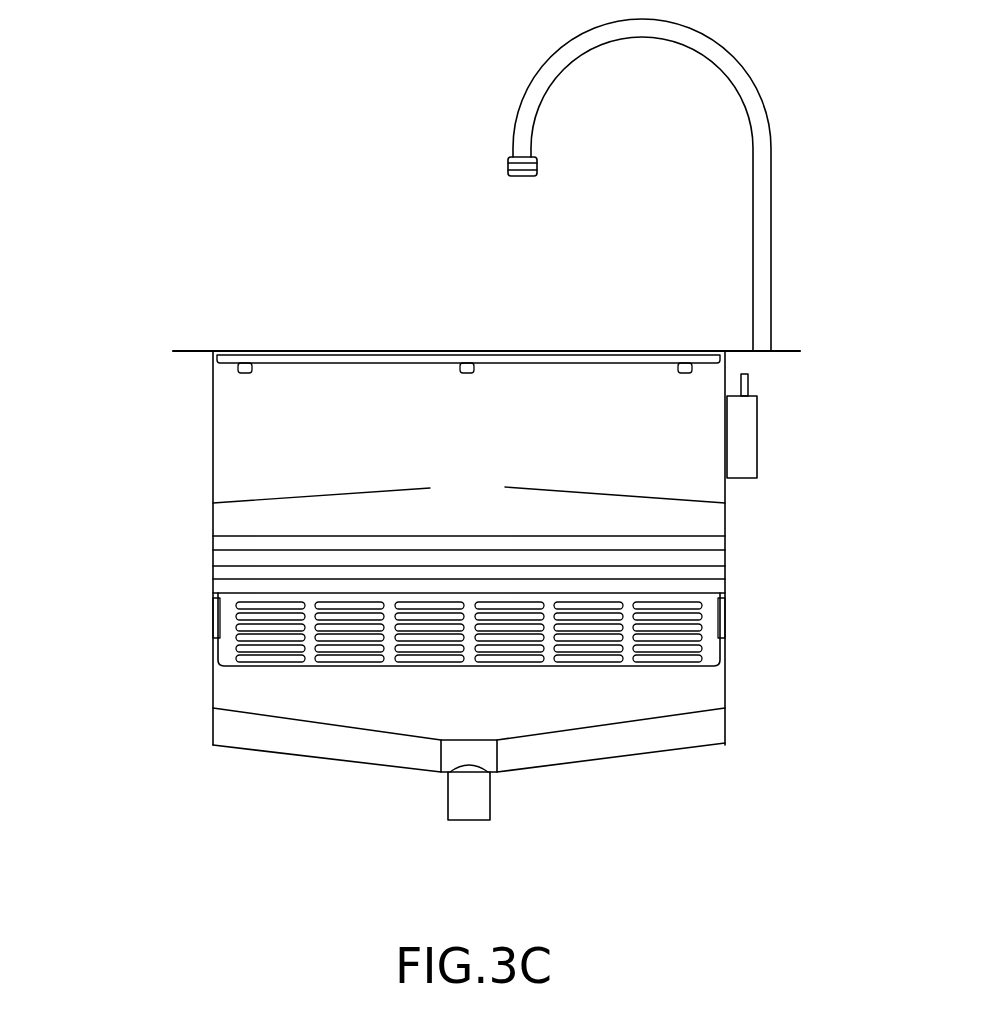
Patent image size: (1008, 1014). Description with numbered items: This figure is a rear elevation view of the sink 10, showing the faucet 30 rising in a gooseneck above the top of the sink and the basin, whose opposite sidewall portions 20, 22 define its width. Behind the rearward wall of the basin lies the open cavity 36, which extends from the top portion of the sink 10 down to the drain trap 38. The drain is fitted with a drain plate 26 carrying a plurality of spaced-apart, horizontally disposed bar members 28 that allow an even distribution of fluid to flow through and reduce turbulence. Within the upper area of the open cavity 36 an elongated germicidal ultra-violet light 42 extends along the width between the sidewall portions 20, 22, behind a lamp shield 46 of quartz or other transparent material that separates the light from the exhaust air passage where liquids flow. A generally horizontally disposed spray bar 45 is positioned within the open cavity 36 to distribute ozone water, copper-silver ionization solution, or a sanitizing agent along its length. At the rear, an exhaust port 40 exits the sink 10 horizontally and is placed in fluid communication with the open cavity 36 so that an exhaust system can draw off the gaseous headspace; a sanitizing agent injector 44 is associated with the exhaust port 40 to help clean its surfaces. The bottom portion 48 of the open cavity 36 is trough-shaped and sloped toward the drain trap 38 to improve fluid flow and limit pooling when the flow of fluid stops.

The sink 10 is at (127, 199).
The sidewall portion 20 is at (740, 553).
The sidewall portion 22 is at (205, 553).
The drain plate 26 is at (712, 647).
The bar members 28 is at (255, 608).
The faucet 30 is at (771, 126).
The open cavity 36 is at (612, 557).
The drain trap 38 is at (483, 797).
The exhaust port 40 is at (744, 466).
The germicidal ultra-violet light 42 is at (232, 541).
The sanitizing agent injector 44 is at (749, 381).
The spray bar 45 is at (245, 572).
The lamp shield 46 is at (270, 497).
The bottom portion 48 is at (558, 748).